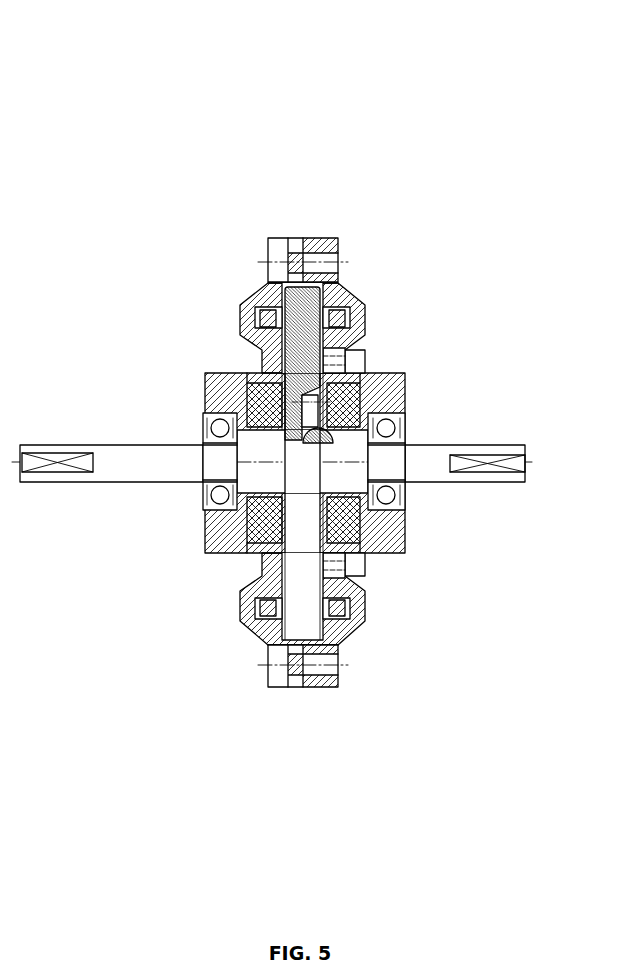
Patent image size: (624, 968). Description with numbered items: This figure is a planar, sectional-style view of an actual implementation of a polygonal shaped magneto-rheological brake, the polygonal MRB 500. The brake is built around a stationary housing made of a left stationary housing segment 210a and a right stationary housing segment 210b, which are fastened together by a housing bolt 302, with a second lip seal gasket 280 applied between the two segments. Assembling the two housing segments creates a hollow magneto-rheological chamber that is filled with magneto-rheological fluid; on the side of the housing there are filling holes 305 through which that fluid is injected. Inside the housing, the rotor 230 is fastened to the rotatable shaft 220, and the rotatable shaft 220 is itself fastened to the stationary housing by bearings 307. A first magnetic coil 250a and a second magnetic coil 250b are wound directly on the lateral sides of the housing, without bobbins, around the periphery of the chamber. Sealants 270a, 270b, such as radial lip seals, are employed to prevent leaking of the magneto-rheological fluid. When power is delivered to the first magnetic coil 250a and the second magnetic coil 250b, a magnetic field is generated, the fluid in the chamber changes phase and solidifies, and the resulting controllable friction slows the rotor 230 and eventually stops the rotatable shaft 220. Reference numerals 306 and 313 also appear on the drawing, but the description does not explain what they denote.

The polygonal shaped MRB 500 is at (238, 118).
The second lip seal gasket 280 is at (312, 232).
The housing bolt 302 is at (322, 256).
The rotor 230 is at (307, 297).
The second magnetic coil 250b is at (347, 317).
The filling holes 305 is at (350, 343).
The housing wall 306 is at (367, 371).
The bearings 307 is at (390, 418).
The rotatable shaft 220 is at (392, 469).
The right stationary housing segment 210b is at (402, 528).
The sealant 270b is at (352, 519).
The lower housing 313 is at (357, 572).
The left stationary housing segment 210a is at (307, 660).
The first magnetic coil 250a is at (248, 309).
The sealant 270a is at (243, 523).